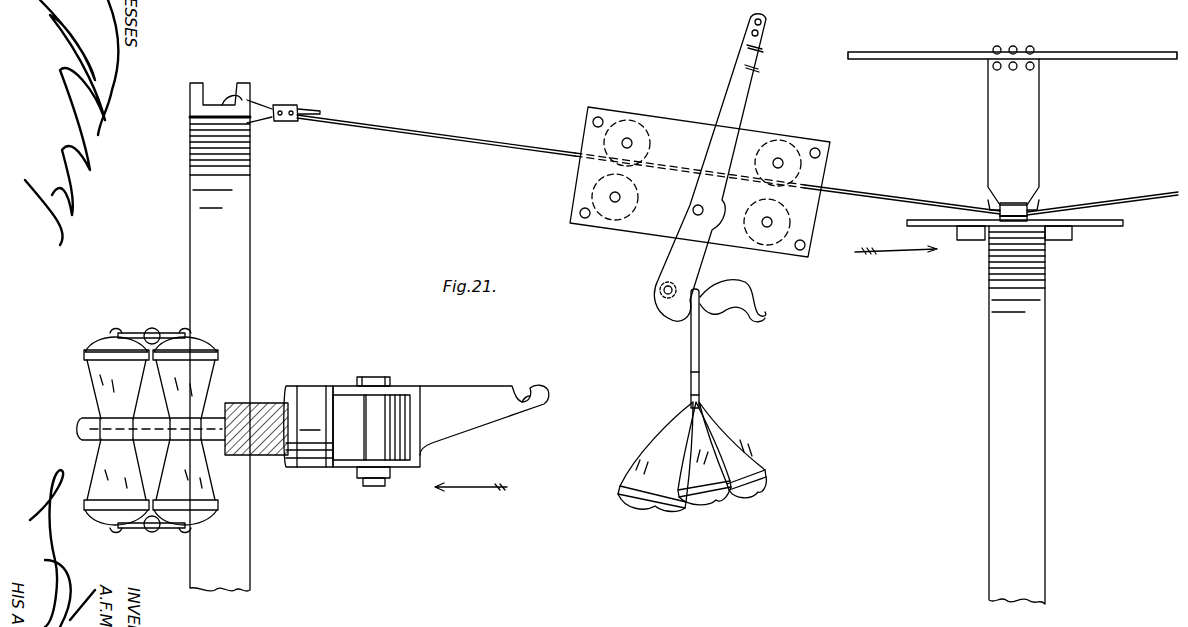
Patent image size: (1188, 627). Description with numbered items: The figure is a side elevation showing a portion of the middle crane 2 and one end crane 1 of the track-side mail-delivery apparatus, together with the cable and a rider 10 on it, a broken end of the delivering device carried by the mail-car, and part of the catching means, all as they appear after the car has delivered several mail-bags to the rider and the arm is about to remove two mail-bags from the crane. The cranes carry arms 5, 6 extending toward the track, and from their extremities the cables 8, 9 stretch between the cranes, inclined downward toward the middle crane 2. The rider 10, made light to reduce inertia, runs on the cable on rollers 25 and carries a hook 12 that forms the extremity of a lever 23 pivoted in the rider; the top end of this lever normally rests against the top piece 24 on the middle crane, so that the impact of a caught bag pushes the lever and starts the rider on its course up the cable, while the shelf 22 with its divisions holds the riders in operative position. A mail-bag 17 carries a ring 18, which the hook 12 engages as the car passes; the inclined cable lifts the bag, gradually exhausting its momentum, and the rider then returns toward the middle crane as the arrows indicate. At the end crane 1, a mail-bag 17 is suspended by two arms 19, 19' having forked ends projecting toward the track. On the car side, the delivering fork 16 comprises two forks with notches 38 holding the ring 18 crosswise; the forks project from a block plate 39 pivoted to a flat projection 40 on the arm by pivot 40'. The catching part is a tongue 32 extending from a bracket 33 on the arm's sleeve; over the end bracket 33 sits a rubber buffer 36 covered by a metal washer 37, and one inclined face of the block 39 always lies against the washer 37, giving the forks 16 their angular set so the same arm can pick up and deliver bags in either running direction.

The crane 1 is at (230, 220).
The middle crane 2 is at (1027, 276).
The arm 5 is at (200, 110).
The arm 6 is at (988, 203).
The cable 8 is at (866, 196).
The cable 9 is at (1112, 202).
The rider 10 is at (640, 226).
The hook 12 is at (733, 294).
The fork 16 is at (466, 432).
The mail-bag 17 is at (705, 430).
The ring 18 is at (702, 357).
The arm 19 is at (151, 318).
The arm 19' is at (151, 540).
The shelf 22 is at (1099, 226).
The lever 23 is at (735, 107).
The top piece 24 is at (1093, 58).
The rollers 25 is at (637, 162).
The tongue 32 is at (82, 432).
The bracket 33 is at (294, 468).
The rubber buffer 36 is at (311, 392).
The metal washer 37 is at (329, 392).
The notches 38 is at (528, 392).
The block plate 39 is at (414, 392).
The flat projection 40 is at (371, 427).
The pivot 40' is at (377, 413).